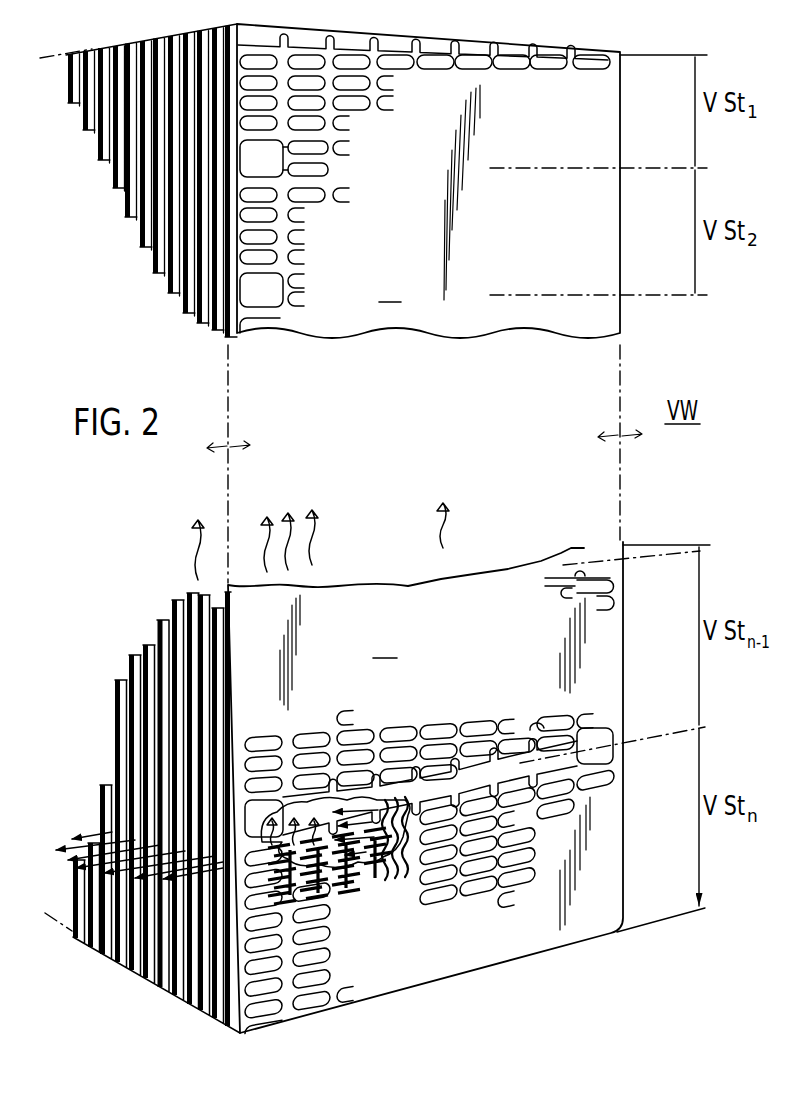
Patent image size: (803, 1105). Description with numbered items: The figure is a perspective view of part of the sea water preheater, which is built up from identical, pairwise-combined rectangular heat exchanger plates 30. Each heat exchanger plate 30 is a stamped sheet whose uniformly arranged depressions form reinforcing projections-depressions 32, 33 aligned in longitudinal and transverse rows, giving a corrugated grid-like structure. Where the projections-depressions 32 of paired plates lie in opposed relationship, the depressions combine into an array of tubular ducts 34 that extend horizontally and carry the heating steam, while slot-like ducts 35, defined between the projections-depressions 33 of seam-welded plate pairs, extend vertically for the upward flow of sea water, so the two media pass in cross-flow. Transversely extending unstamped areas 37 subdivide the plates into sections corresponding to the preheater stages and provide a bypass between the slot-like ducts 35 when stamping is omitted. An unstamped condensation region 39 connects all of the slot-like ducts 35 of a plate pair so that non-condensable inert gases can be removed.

The heat exchanger plate 30 is at (425, 529).
The projections-depressions 32 is at (247, 981).
The projections-depressions 33 is at (293, 1020).
The tubular ducts 34 is at (410, 858).
The slot-like ducts 35 is at (367, 902).
The unstamped areas 37 is at (585, 750).
The condensation region 39 is at (566, 730).